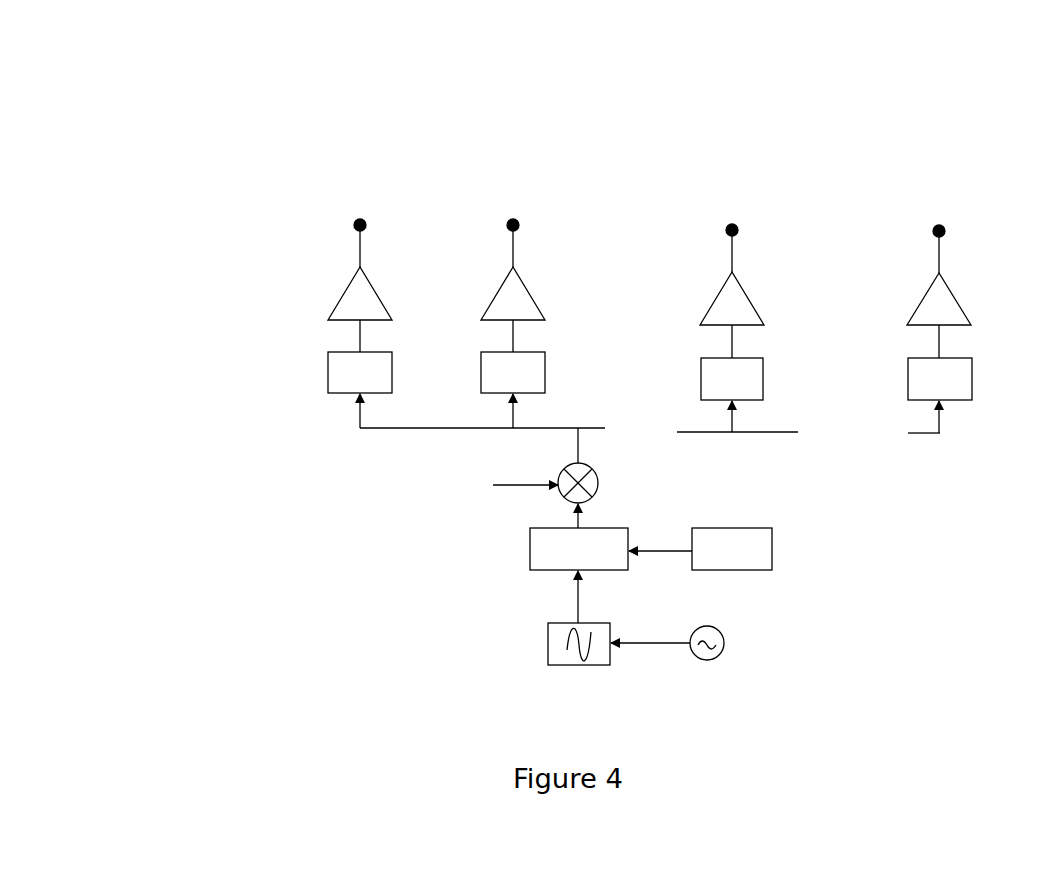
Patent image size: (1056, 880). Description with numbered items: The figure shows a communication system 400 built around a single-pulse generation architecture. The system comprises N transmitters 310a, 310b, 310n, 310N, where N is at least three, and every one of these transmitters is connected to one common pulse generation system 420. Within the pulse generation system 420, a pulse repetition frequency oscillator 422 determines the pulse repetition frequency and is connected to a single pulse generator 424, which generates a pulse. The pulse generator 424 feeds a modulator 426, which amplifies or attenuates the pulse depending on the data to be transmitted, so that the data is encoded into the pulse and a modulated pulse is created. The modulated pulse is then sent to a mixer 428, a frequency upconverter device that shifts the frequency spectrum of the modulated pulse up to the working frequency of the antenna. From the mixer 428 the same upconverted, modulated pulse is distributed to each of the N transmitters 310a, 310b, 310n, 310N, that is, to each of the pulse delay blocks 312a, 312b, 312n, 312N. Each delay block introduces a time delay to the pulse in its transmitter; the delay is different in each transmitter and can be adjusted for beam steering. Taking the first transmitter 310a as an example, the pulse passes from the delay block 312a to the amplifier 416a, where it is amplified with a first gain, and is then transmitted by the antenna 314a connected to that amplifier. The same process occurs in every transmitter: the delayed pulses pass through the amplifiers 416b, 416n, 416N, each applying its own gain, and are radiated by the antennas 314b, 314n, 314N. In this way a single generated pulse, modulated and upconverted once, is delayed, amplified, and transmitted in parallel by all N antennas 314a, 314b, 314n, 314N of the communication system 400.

The communication system 400 is at (157, 107).
The first transmitter 310a is at (310, 243).
The second transmitter 310b is at (470, 250).
The nth transmitter 310n is at (698, 275).
The Nth transmitter 310N is at (880, 250).
The antenna 314a is at (358, 218).
The antenna 314b is at (512, 218).
The antenna 314n is at (731, 222).
The antenna 314N is at (938, 224).
The amplifier 416a is at (330, 300).
The amplifier 416b is at (483, 300).
The amplifier 416n is at (790, 285).
The amplifier 416N is at (965, 305).
The delay block 312a is at (328, 378).
The delay block 312b is at (483, 378).
The delay block 312n is at (702, 385).
The delay block 312N is at (908, 385).
The pulse generation system 420 is at (422, 573).
The pulse repetition frequency (PRF) oscillator 422 is at (725, 635).
The pulse generator 424 is at (540, 645).
The modulator 426 is at (523, 550).
The mixer 428 is at (598, 483).